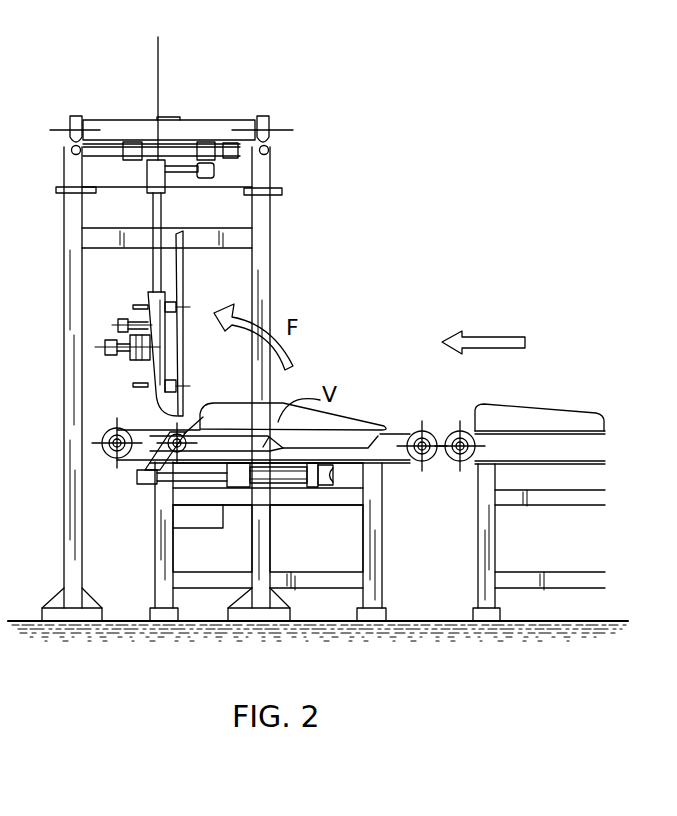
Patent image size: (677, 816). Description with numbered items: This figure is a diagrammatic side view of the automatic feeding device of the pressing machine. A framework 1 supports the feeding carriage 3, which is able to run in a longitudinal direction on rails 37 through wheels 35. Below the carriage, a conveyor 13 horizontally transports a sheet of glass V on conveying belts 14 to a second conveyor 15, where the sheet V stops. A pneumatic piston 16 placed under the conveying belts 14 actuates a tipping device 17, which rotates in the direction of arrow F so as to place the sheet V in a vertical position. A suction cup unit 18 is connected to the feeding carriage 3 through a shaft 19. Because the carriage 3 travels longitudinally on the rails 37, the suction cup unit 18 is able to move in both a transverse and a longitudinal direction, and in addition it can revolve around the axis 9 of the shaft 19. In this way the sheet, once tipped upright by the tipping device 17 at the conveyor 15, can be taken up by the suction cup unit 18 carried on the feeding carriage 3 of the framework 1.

The framework 1 is at (262, 238).
The feeding carriage 3 is at (190, 129).
The axis 9 is at (157, 59).
The conveyor 13 is at (603, 448).
The conveying belts 14 is at (398, 431).
The conveyor 15 is at (387, 452).
The pneumatic piston 16 is at (280, 478).
The tipping device 17 is at (278, 428).
The suction cup unit 18 is at (158, 306).
The shaft 19 is at (165, 210).
The wheels 35 is at (270, 123).
The rails 37 is at (272, 145).